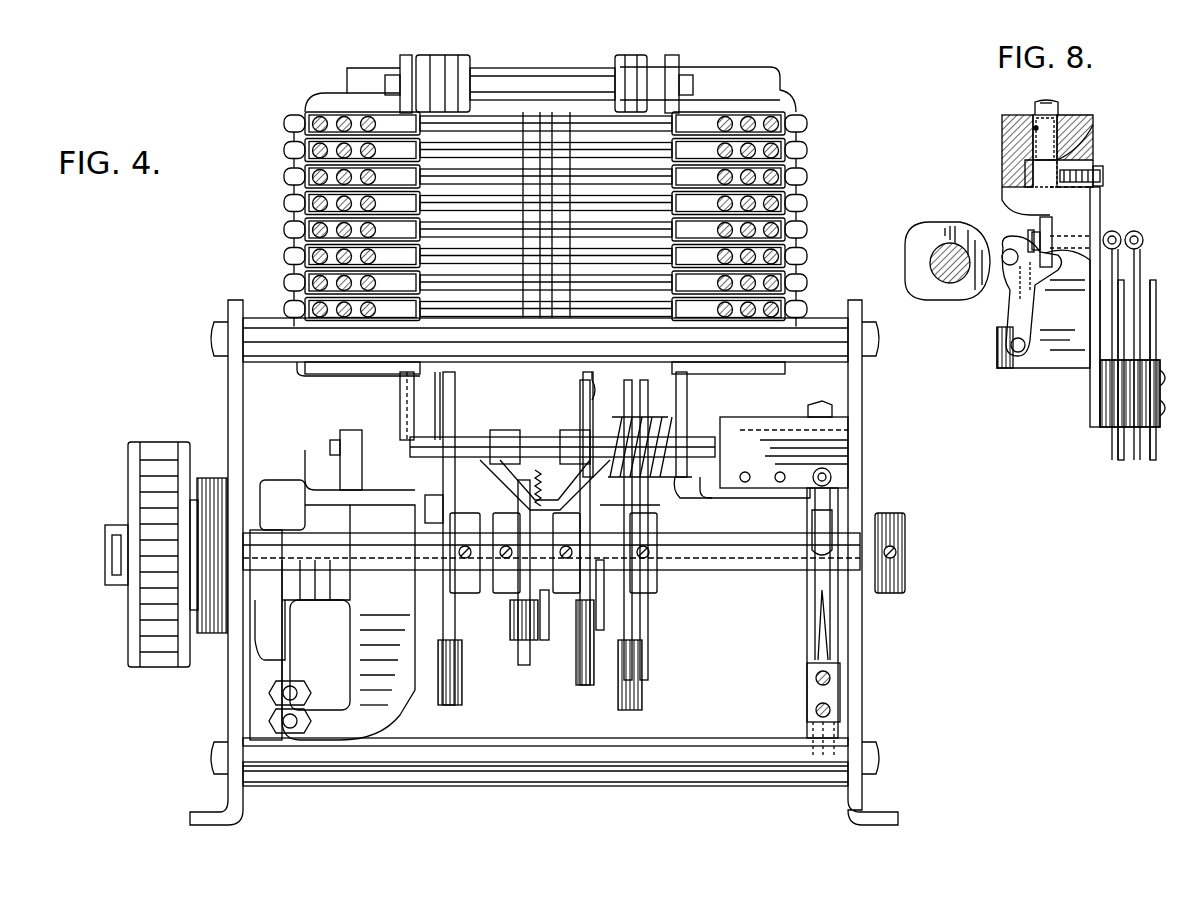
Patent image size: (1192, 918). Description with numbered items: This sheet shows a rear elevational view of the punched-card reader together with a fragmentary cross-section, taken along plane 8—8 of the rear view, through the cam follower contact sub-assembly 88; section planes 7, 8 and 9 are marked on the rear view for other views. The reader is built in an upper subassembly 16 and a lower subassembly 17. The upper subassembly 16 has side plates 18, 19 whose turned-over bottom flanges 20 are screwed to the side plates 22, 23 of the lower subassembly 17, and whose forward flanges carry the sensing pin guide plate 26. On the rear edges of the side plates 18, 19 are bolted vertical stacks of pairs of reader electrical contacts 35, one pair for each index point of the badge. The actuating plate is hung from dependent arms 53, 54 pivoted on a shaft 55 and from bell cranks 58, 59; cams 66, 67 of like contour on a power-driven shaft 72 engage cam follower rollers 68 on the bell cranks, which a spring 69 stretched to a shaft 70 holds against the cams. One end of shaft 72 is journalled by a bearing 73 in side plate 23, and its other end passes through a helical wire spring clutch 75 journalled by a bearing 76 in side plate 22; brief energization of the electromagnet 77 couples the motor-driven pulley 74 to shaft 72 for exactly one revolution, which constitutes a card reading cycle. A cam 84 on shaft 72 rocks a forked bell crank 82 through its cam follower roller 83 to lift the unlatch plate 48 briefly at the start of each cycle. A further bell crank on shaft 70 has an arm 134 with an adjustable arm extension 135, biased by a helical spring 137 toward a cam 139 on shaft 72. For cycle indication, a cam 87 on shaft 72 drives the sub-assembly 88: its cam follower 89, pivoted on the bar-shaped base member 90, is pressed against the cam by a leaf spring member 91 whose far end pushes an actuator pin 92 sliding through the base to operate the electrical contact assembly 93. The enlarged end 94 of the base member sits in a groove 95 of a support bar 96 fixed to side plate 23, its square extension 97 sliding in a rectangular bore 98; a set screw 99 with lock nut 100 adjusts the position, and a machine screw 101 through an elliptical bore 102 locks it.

In FIG. 4, the section line 7- 7 is at (432, 380).
In FIG. 4, the section line 8- 8 is at (787, 383).
In FIG. 4, the section line 9- 9 is at (566, 384).
In FIG. 4, the upper subassembly 16 is at (812, 226).
In FIG. 4, the subassembly 17 is at (553, 562).
In FIG. 4, the side plate 18 is at (404, 55).
In FIG. 4, the side plate 19 is at (680, 55).
In FIG. 4, the bottom flanges 20 is at (708, 498).
In FIG. 4, the side plate 22 is at (230, 390).
In FIG. 4, the side plate 23 is at (862, 380).
In FIG. 4, the sensing pin guide plate 26 is at (752, 67).
In FIG. 4, the reader electrical contacts 35 is at (312, 272).
In FIG. 4, the unlatch plate 48 is at (590, 410).
In FIG. 4, the dependent arm 53 is at (450, 82).
In FIG. 4, the dependent arm 54 is at (630, 88).
In FIG. 4, the shaft 55 is at (545, 80).
In FIG. 4, the bell crank 58 is at (441, 385).
In FIG. 4, the bell crank 59 is at (649, 636).
In FIG. 4, the cam 66 is at (447, 625).
In FIG. 4, the cam 67 is at (590, 634).
In FIG. 4, the cam follower rollers 68 is at (460, 688).
In FIG. 4, the spring 69 is at (540, 490).
In FIG. 4, the shaft 70 is at (548, 440).
In FIG. 4, the shaft 72 is at (718, 570).
In FIG. 8, the shaft 72 is at (952, 283).
In FIG. 4, the bearing 73 is at (880, 510).
In FIG. 4, the pulley 74 is at (156, 650).
In FIG. 4, the helical wire spring clutch 75 is at (332, 621).
In FIG. 4, the bearing 76 is at (212, 478).
In FIG. 4, the electromagnet 77 is at (298, 630).
In FIG. 4, the forked bell crank 82 is at (546, 612).
In FIG. 4, the cam follower roller 83 is at (518, 630).
In FIG. 4, the cam 84 is at (520, 660).
In FIG. 4, the cam 87 is at (810, 515).
In FIG. 8, the cam 87 is at (930, 228).
In FIG. 8, the cam follower contact sub-assembly 88 is at (1145, 225).
In FIG. 8, the cam follower 89 is at (1012, 298).
In FIG. 8, the sub-assembly base member 90 is at (1063, 360).
In FIG. 8, the leaf spring member 91 is at (1028, 236).
In FIG. 8, the actuator pin 92 is at (1046, 218).
In FIG. 4, the electrical contact assembly 93 is at (826, 636).
In FIG. 8, the electrical contact assembly 93 is at (1140, 325).
In FIG. 8, the enlarged end 94 is at (1018, 212).
In FIG. 8, the groove 95 is at (1100, 194).
In FIG. 4, the support bar 96 is at (840, 430).
In FIG. 8, the support bar 96 is at (1093, 130).
In FIG. 8, the extension 97 is at (1028, 165).
In FIG. 8, the rectangular bore 98 is at (1092, 145).
In FIG. 8, the set screw 99 is at (1094, 160).
In FIG. 8, the lock nut 100 is at (1103, 176).
In FIG. 8, the machine screw 101 is at (1048, 135).
In FIG. 8, the elliptical bore 102 is at (1036, 126).
In FIG. 4, the arm 134 is at (630, 506).
In FIG. 4, the arm extension 135 is at (602, 605).
In FIG. 4, the helical spring 137 is at (648, 420).
In FIG. 4, the cam 139 is at (584, 680).